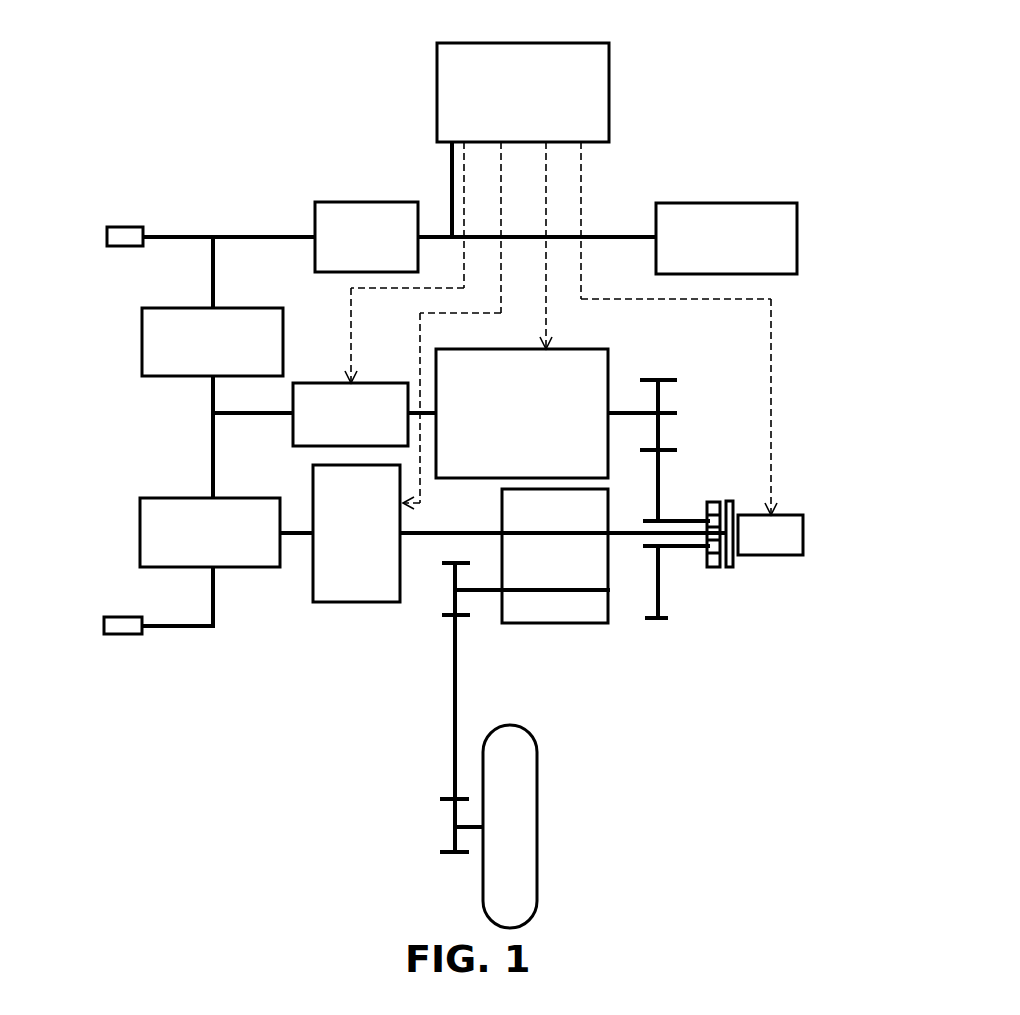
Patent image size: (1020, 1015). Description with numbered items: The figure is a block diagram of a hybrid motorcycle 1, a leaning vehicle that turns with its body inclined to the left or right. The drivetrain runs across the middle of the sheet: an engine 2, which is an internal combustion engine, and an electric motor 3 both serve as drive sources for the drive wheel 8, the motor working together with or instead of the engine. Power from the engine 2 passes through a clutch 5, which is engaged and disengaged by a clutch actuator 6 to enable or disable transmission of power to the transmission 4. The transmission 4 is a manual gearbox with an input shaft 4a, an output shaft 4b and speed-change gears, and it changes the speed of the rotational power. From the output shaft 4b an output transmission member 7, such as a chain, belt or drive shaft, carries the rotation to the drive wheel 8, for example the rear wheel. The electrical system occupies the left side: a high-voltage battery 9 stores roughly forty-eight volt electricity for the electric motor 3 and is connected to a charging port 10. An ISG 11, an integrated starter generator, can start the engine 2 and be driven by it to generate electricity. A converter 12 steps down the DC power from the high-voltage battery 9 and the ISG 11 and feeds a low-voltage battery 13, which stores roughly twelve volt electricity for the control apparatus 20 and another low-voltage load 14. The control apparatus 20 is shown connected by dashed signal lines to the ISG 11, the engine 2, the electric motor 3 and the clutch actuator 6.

The hybrid motorcycle 1 is at (172, 88).
The engine 2 is at (608, 360).
The electric motor 3 is at (358, 602).
The transmission 4 is at (540, 624).
The input shaft 4a is at (627, 538).
The output shaft 4b is at (583, 592).
The clutch 5 is at (729, 568).
The clutch actuator 6 is at (783, 556).
The output transmission member 7 is at (455, 718).
The drive wheel 8 is at (537, 803).
The high-voltage battery 9 is at (140, 515).
The charging port 10 is at (122, 634).
The ISG 11 is at (321, 383).
The converter 12 is at (142, 325).
The low-voltage battery 13 is at (337, 202).
The low-voltage load 14 is at (756, 203).
The control apparatus 20 is at (609, 70).